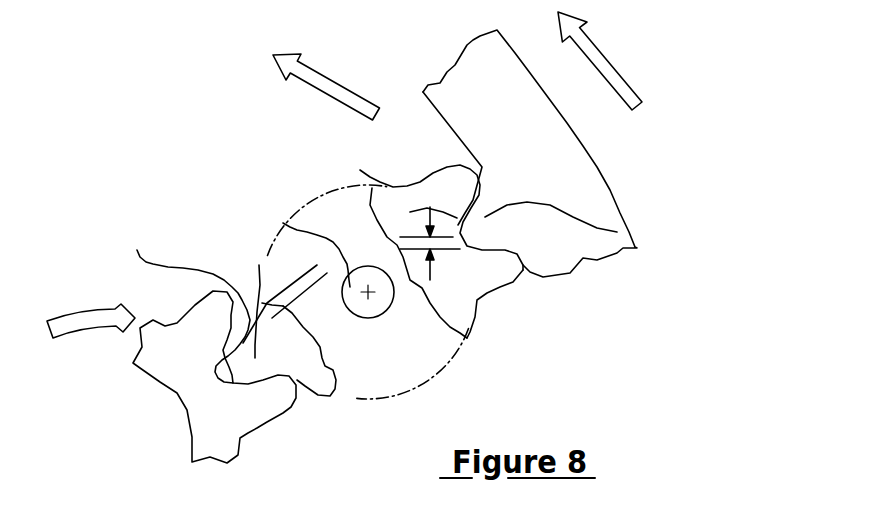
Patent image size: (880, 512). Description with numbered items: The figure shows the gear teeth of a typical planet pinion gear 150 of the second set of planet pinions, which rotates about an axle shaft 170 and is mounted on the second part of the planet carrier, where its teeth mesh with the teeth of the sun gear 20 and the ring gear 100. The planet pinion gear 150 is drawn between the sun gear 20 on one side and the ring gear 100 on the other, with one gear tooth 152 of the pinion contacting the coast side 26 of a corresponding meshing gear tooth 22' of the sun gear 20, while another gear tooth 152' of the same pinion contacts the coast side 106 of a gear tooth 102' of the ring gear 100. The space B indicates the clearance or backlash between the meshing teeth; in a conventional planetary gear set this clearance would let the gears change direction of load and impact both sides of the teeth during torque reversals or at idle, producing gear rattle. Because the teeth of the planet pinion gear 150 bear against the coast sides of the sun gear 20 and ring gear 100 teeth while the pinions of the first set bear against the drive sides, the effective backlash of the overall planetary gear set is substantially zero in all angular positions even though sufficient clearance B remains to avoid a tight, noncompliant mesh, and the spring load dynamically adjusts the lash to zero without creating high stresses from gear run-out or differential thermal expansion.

The sun gear 20 is at (202, 388).
The gear tooth of sun gear 22' is at (339, 427).
The coast side of gear tooth 26 is at (266, 386).
The ring gear 100 is at (590, 173).
The gear tooth of ring gear 102' is at (596, 217).
The coast side of gear tooth 106 is at (480, 170).
The planet pinion gear 150 is at (407, 373).
The gear tooth of planet pinion gear 152 is at (181, 291).
The gear tooth of planet pinion gear 152' is at (399, 227).
The axle shaft 170 is at (283, 223).
The space B is at (330, 317).